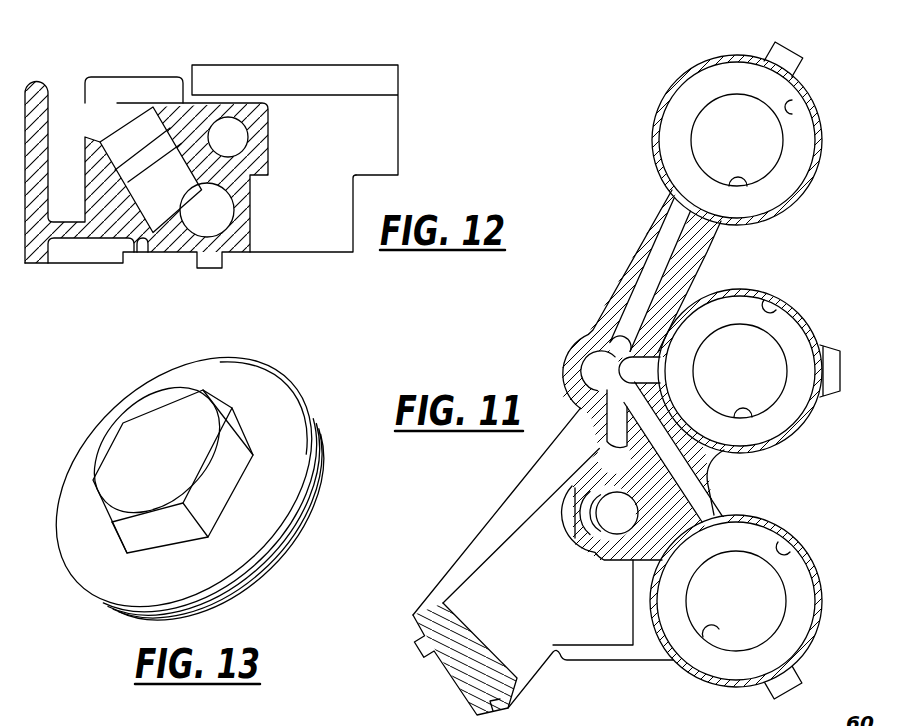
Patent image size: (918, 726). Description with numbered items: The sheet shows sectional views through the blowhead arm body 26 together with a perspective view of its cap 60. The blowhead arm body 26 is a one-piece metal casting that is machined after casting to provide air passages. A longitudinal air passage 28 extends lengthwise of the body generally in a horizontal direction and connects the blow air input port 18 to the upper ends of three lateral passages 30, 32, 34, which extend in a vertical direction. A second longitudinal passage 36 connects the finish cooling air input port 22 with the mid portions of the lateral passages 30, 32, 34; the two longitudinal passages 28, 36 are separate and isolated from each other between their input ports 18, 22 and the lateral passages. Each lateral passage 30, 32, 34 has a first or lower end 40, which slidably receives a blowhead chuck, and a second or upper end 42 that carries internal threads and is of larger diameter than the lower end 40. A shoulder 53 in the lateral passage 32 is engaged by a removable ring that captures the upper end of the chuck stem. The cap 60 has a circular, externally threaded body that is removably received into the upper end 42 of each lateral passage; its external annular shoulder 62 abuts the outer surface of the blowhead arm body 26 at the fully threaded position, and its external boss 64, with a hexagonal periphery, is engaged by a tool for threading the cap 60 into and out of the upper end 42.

In FIG. 11, the blow air input port 18 is at (590, 362).
In FIG. 12, the finish cooling air input port 22 is at (116, 144).
In FIG. 11, the finish cooling air input port 22 is at (587, 516).
In FIG. 12, the blowhead arm body 26 is at (397, 93).
In FIG. 11, the blowhead arm body 26 is at (632, 262).
In FIG. 12, the longitudinal air passage 28 is at (238, 128).
In FIG. 11, the longitudinal air passage 28 is at (668, 245).
In FIG. 11, the lateral passage 30 is at (758, 136).
In FIG. 11, the lateral passage 32 is at (758, 352).
In FIG. 11, the lateral passage 34 is at (763, 595).
In FIG. 12, the second longitudinal passage 36 is at (205, 230).
In FIG. 11, the first or lower end 40 is at (740, 178).
In FIG. 11, the second or upper end 42 is at (798, 108).
In FIG. 11, the shoulder 53 is at (783, 405).
In FIG. 13, the cap 60 is at (259, 339).
In FIG. 13, the external annular shoulder 62 is at (304, 418).
In FIG. 13, the external boss 64 is at (128, 447).